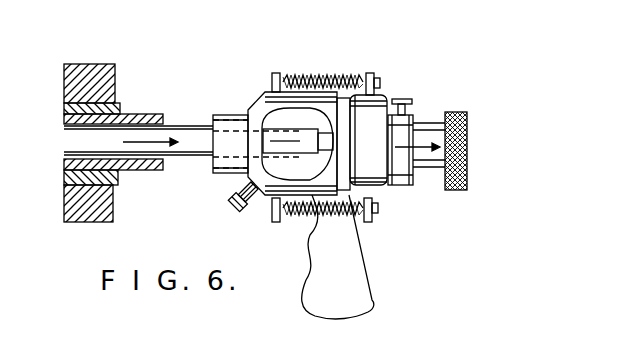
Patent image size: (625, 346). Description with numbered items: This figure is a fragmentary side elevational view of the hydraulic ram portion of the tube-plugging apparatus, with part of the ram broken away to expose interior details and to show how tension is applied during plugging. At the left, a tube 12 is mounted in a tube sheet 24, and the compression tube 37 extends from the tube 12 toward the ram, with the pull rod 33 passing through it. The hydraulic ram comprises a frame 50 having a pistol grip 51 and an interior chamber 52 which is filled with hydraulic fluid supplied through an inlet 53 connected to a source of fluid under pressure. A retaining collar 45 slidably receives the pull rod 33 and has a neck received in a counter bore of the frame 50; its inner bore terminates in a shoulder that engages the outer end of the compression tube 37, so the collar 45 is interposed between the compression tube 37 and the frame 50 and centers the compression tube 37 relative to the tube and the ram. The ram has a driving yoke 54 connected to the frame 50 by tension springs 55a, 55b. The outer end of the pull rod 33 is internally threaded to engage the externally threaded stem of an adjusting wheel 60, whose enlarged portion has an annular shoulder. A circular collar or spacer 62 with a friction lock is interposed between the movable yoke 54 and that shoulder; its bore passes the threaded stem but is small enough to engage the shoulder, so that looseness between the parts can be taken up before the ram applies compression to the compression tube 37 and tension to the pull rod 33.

The tube sheet 24 is at (93, 72).
The tube 12 is at (118, 102).
The compression tube 37 is at (140, 116).
The pull rod 33 is at (196, 154).
The retaining collar 45 is at (230, 117).
The frame 50 is at (263, 99).
The interior chamber 52 is at (297, 144).
The tension spring 55a is at (303, 80).
The tension spring 55b is at (282, 216).
The driving yoke 54 is at (386, 98).
The spacer 62 is at (412, 120).
The adjusting wheel 60 is at (466, 113).
The pistol grip 51 is at (357, 289).
The inlet 53 is at (240, 203).